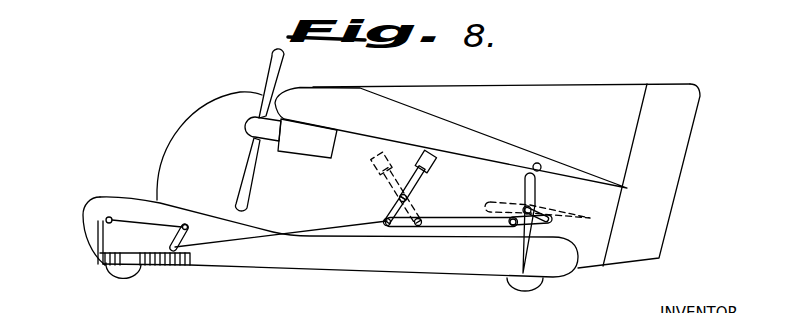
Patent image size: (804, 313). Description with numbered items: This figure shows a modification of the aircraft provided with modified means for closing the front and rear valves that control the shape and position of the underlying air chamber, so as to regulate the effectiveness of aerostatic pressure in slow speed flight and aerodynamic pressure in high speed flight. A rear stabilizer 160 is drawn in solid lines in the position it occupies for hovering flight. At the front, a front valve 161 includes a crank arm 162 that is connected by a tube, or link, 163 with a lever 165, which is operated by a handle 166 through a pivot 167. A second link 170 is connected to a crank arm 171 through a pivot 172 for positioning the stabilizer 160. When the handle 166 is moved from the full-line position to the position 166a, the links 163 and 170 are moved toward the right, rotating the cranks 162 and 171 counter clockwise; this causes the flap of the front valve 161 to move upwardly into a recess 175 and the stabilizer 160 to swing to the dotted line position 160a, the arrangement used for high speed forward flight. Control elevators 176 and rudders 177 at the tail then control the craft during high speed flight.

The rear stabilizer 160 is at (534, 197).
The dotted line position of stabilizer 160a is at (590, 217).
The front valve 161 is at (113, 241).
The crank arm 162 is at (187, 237).
The tube or link 163 is at (282, 233).
The lever 165 is at (391, 213).
The handle 166 is at (433, 163).
The handle position 166a is at (381, 168).
The pivot 167 is at (407, 199).
The second link 170 is at (460, 224).
The crank arm 171 is at (521, 211).
The pivot 172 is at (545, 223).
The recess 175 is at (108, 217).
The control elevator 176 is at (568, 168).
The rudder 177 is at (689, 132).